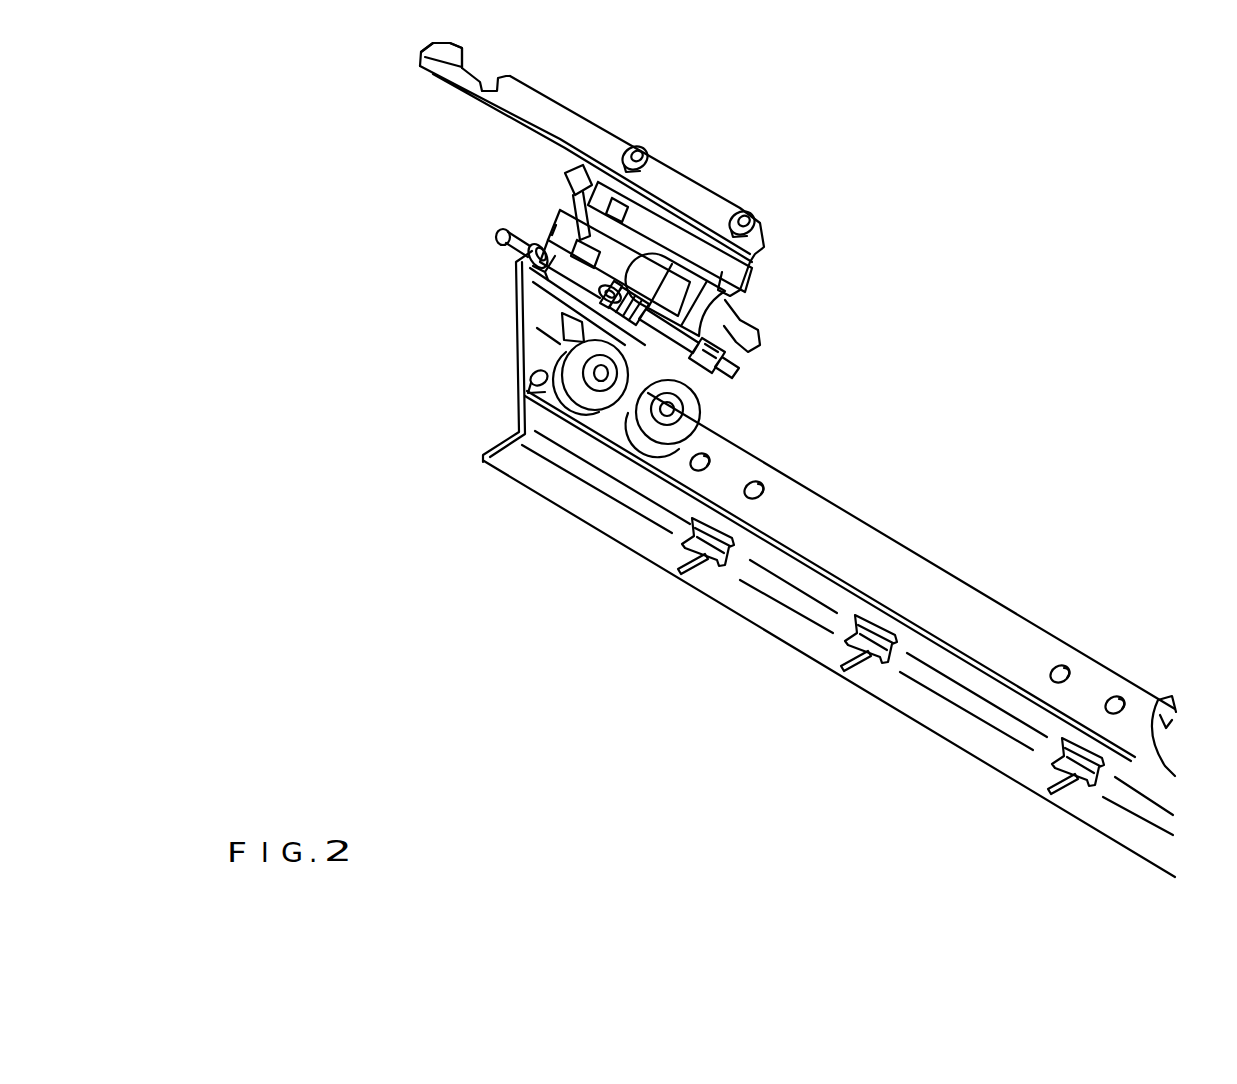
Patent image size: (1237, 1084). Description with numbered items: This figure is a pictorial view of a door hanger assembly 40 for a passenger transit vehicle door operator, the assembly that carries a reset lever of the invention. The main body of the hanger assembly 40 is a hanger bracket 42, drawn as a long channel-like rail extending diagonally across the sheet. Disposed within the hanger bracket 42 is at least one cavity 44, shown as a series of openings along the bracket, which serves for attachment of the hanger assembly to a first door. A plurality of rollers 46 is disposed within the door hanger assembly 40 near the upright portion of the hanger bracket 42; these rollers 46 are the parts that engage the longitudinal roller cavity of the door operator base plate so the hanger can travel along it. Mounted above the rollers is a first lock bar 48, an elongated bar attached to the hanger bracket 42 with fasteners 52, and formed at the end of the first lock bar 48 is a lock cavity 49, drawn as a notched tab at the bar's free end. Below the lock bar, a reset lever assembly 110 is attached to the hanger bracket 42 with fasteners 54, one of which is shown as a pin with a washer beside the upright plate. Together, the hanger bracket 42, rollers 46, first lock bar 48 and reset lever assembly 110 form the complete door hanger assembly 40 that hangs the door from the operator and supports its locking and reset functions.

The door hanger assembly 40 is at (842, 108).
The hanger bracket 42 is at (928, 562).
The cavity 44 is at (1050, 778).
The rollers 46 is at (714, 341).
The first lock bar 48 is at (625, 128).
The lock cavity 49 is at (489, 76).
The fasteners 52 is at (742, 211).
The fasteners 54 is at (550, 226).
The reset lever assembly 110 is at (602, 258).